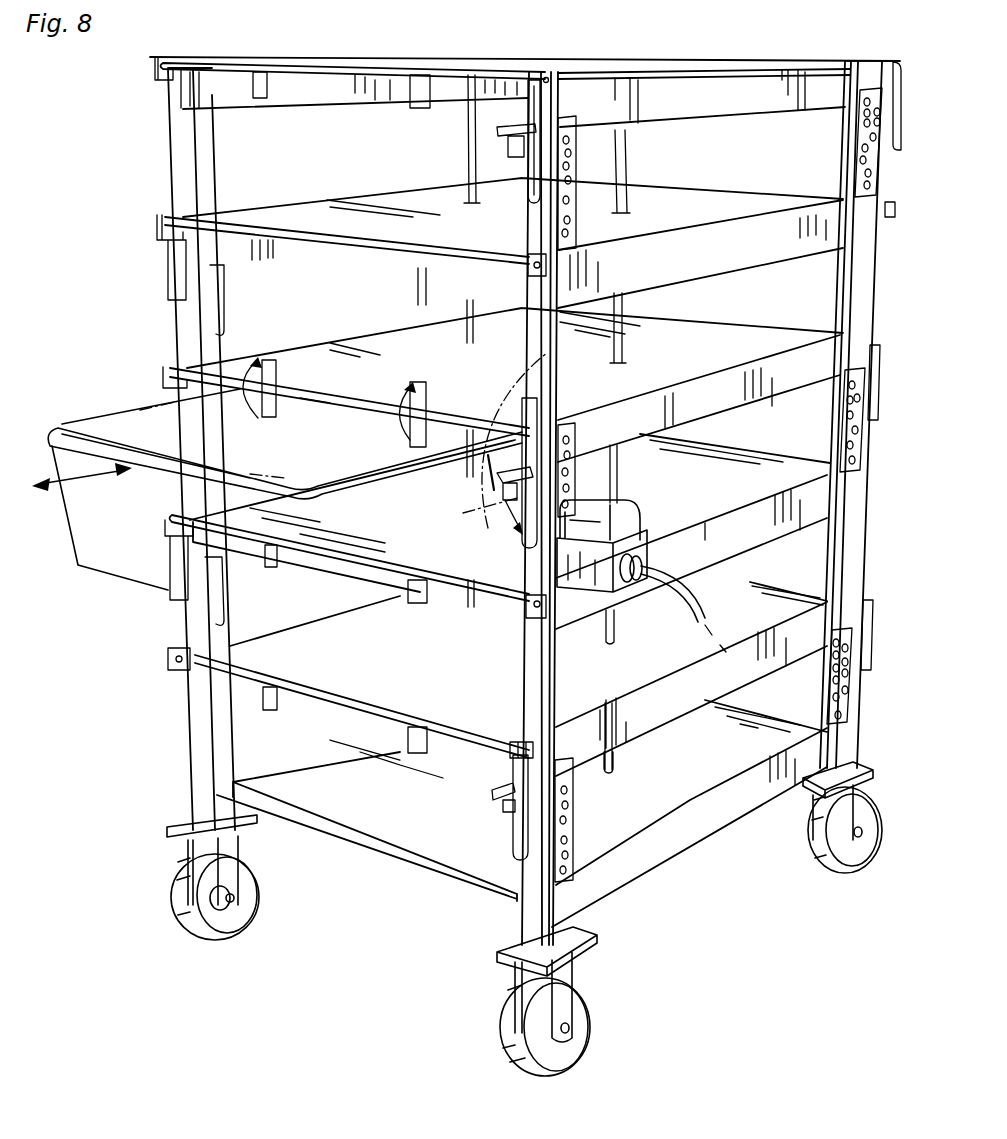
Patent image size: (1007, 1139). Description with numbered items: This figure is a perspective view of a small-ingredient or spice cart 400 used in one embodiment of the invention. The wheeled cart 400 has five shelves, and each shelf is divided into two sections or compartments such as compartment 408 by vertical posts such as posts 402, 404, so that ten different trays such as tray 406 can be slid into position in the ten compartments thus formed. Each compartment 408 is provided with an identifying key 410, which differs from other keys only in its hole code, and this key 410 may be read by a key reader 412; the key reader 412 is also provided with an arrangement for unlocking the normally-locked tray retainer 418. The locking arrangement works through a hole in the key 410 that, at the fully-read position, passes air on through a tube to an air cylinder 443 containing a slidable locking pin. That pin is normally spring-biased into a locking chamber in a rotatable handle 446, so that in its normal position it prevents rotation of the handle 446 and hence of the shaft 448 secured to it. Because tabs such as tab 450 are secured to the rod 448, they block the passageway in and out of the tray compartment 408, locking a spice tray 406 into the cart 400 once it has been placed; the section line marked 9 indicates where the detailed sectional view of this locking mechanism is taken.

The wheeled cart 400 is at (700, 33).
The vertical post 402 is at (620, 160).
The vertical post 404 is at (470, 146).
The tray 406 is at (163, 590).
The compartment 408 is at (243, 440).
The identifying key 410 is at (572, 462).
The key reader 412 is at (641, 540).
The tray retainer 418 is at (405, 435).
The air cylinder 443 is at (540, 512).
The rotatable handle 446 is at (550, 438).
The shaft 448 is at (318, 408).
The tab 450 is at (418, 392).
The section line 9 is at (748, 570).